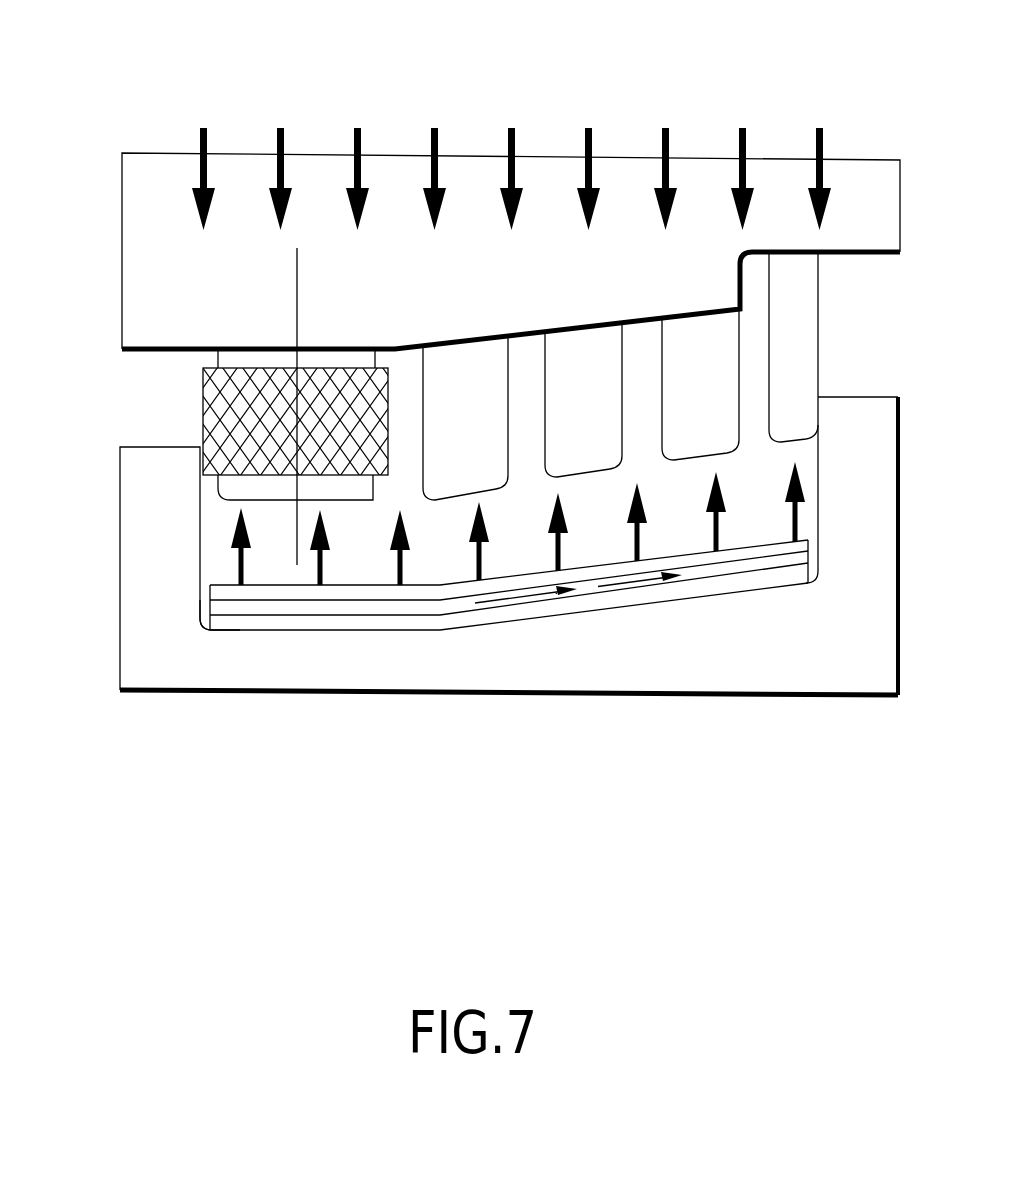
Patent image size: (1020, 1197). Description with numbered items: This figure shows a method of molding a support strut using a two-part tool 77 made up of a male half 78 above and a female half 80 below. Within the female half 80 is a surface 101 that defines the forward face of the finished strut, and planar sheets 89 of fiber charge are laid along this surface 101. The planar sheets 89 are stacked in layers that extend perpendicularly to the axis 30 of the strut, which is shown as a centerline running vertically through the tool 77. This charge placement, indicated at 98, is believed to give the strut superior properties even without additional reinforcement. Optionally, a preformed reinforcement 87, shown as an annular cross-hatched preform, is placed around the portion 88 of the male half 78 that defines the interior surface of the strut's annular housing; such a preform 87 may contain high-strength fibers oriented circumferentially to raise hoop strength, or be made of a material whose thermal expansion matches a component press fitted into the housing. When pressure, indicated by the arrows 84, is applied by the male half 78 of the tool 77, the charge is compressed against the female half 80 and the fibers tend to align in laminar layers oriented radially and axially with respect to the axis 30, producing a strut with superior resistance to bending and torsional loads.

The tool 77 is at (188, 72).
The male half of the tool 78 is at (122, 238).
The arrows indicating pressure 84 is at (593, 147).
The axis 30 is at (298, 273).
The preformed reinforcement 87 is at (202, 410).
The portion of the male half 88 is at (227, 498).
The female half of the tool 80 is at (858, 653).
The planar sheets 89 is at (210, 612).
The surface 101 is at (367, 634).
The charge placement 98 is at (698, 575).